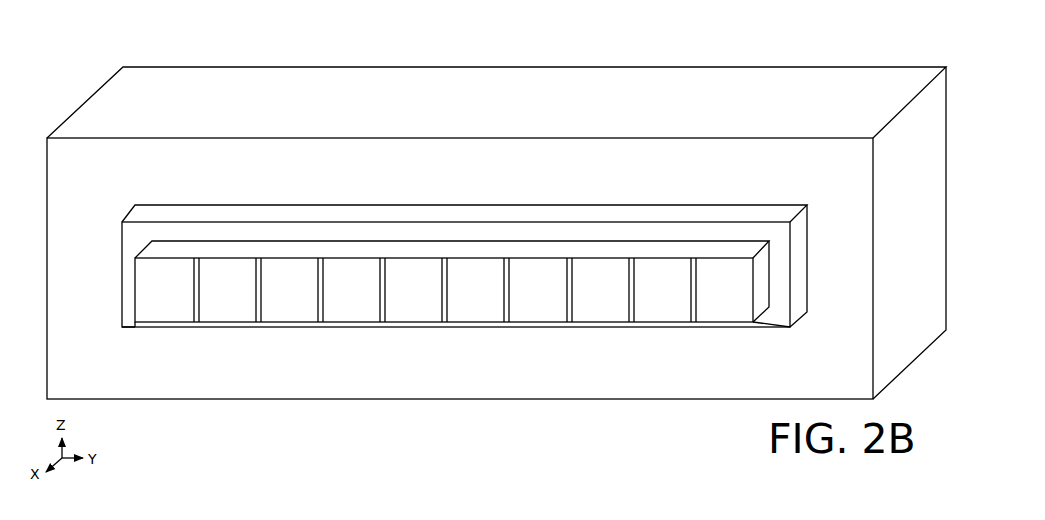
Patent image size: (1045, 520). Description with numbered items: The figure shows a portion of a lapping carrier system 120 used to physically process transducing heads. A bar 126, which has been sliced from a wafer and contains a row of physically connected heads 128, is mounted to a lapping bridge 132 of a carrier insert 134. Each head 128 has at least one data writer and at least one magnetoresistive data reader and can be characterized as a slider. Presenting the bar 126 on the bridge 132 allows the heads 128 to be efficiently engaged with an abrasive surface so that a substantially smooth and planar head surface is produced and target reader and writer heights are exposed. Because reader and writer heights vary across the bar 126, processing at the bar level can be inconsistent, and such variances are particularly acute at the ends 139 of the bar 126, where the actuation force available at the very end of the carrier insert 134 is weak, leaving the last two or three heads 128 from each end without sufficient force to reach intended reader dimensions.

The lapping carrier system 120 is at (496, 210).
The carrier insert 134 is at (95, 166).
The lapping bridge 132 is at (634, 208).
The bar 126 is at (421, 278).
The heads 128 is at (247, 300).
The ends 139 is at (134, 333).